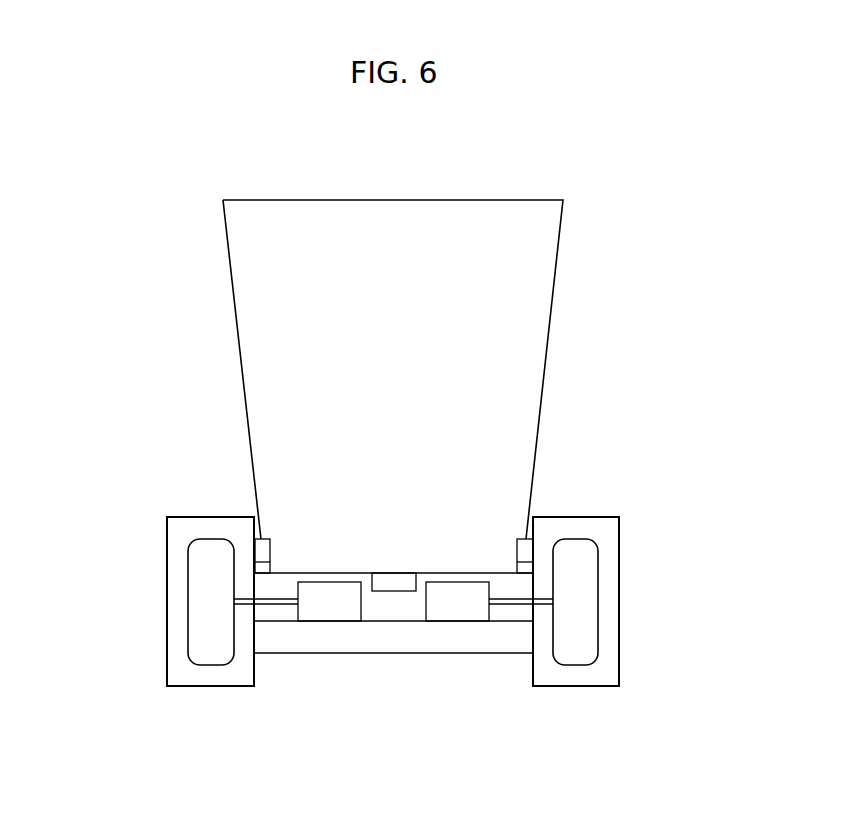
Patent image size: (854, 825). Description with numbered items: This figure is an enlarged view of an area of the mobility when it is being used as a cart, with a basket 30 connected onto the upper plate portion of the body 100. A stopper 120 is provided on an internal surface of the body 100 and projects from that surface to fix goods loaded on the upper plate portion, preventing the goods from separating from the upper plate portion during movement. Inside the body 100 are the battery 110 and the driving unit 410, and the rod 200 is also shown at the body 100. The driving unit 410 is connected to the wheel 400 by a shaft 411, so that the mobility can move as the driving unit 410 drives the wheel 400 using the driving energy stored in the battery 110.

The basket 30 is at (530, 298).
The body 100 is at (486, 653).
The battery 110 is at (313, 638).
The stopper 120 is at (268, 548).
The rod 200 is at (397, 585).
The wheel 400 is at (583, 625).
The driving unit 410 is at (460, 592).
The shaft 411 is at (513, 598).